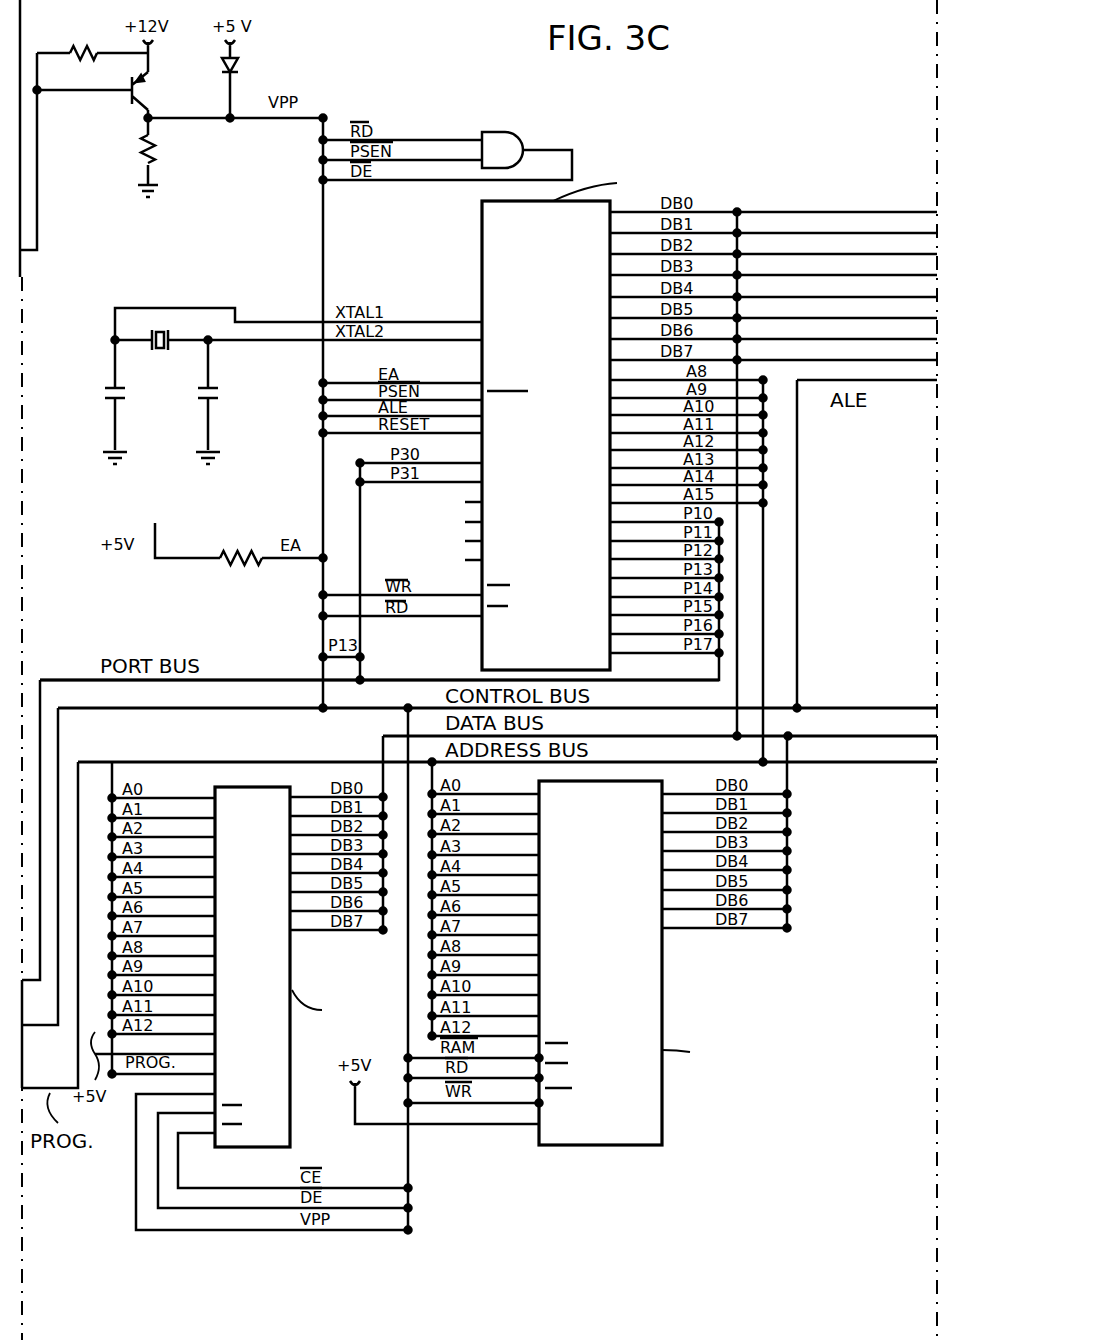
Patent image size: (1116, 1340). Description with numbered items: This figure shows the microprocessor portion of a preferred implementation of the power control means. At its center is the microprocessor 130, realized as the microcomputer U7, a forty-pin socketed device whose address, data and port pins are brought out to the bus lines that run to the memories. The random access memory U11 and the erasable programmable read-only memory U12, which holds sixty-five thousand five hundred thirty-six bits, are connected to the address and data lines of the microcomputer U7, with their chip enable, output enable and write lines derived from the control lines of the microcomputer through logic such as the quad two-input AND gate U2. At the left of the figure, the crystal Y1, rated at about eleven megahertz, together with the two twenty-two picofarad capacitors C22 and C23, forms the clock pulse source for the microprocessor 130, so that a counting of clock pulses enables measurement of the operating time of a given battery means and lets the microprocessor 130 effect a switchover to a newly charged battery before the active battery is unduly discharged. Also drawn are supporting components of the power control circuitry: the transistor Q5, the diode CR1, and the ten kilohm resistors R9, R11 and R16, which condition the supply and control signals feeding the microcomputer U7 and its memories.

The microprocessor 130 is at (602, 414).
The microcomputer U7 is at (546, 435).
The quad 2-input AND gate U2 is at (502, 150).
The random access memory U11 is at (641, 963).
The erasable programmable read-only memory U12 is at (245, 1150).
The resistor R9 is at (82, 44).
The resistor R11 is at (168, 149).
The resistor R16 is at (244, 567).
The transistor Q5 is at (156, 91).
The diode CR1 is at (253, 69).
The crystal Y1 is at (159, 352).
The capacitor C22 is at (91, 394).
The capacitor C23 is at (229, 394).